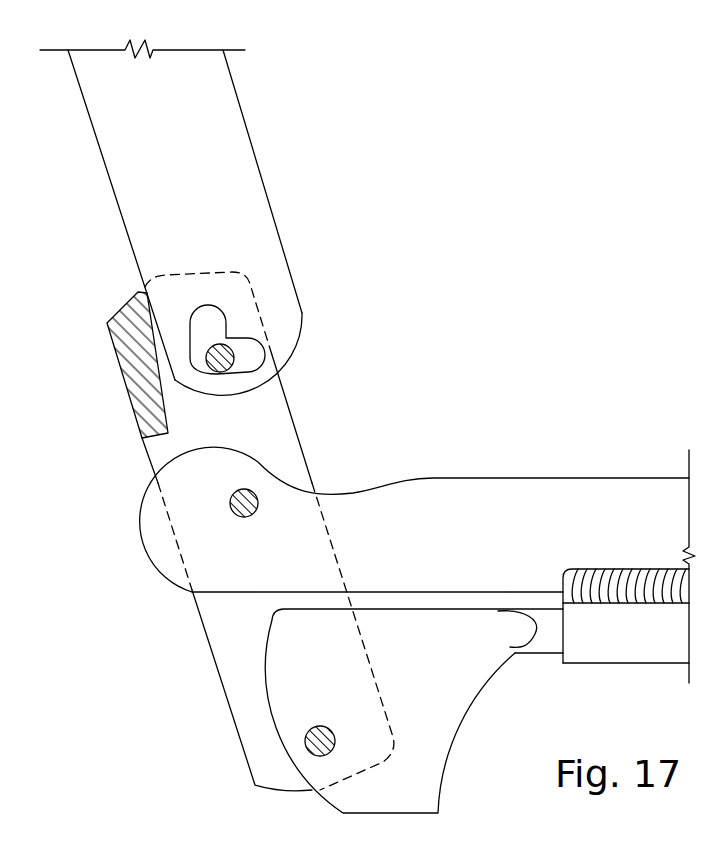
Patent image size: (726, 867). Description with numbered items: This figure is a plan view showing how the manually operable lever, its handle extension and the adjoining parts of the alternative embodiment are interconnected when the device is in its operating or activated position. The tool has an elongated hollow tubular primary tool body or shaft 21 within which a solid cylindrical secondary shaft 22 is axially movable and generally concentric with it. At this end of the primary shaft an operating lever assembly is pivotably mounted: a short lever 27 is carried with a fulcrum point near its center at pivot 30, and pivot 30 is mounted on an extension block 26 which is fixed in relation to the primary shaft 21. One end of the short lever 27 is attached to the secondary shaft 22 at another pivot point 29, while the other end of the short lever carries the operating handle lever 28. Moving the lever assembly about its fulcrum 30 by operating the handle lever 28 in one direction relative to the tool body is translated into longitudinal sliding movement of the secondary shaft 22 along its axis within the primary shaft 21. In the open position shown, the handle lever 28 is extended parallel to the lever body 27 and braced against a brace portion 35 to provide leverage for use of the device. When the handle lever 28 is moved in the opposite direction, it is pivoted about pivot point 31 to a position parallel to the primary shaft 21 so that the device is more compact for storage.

The primary tool body or shaft 21 is at (657, 642).
The secondary shaft 22 is at (550, 637).
The extension block 26 is at (577, 502).
The short lever 27 is at (230, 657).
The handle lever 28 is at (252, 183).
The pivot point 29 is at (305, 748).
The pivot 30 is at (230, 504).
The pivot point 31 is at (232, 358).
The brace portion 35 is at (142, 382).